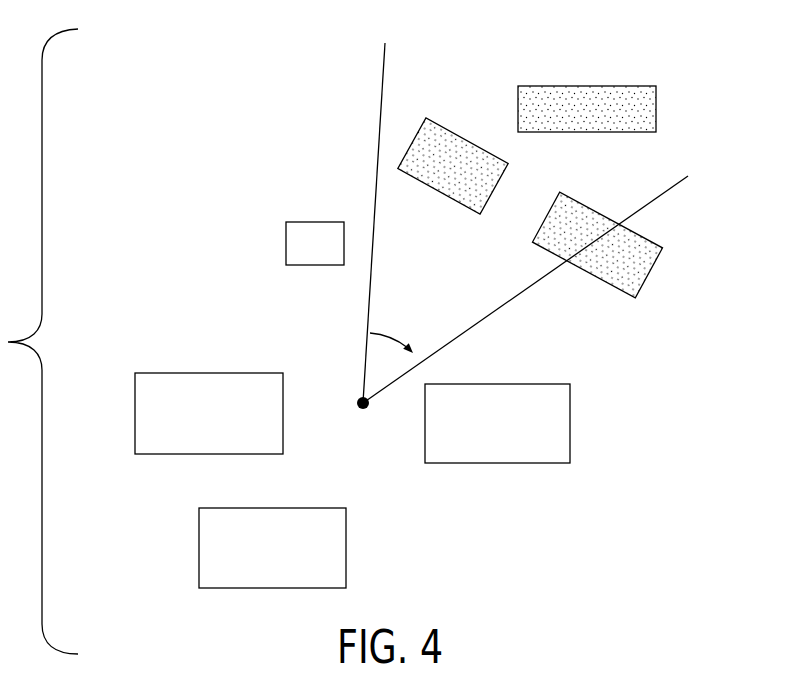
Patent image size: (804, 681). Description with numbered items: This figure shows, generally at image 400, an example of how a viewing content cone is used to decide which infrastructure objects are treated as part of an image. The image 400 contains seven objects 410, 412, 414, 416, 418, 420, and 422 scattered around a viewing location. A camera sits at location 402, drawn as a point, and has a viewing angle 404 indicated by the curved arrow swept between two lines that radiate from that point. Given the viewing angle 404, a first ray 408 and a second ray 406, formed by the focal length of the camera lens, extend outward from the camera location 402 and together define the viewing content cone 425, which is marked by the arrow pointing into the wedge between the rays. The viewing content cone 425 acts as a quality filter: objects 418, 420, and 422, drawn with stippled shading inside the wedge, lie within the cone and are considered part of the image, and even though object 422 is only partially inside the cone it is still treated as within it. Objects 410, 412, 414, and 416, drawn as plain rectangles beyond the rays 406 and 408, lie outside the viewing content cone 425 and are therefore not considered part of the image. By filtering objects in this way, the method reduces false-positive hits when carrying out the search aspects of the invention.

The image 400 is at (158, 149).
The camera location 402 is at (366, 412).
The viewing angle 404 is at (384, 338).
The ray 406 is at (531, 283).
The ray 408 is at (383, 115).
The object 410 is at (286, 243).
The object 412 is at (135, 410).
The object 414 is at (199, 551).
The object 416 is at (571, 422).
The object 418 is at (447, 197).
The object 420 is at (657, 107).
The object 422 is at (648, 272).
The viewing content cone 425 is at (694, 202).